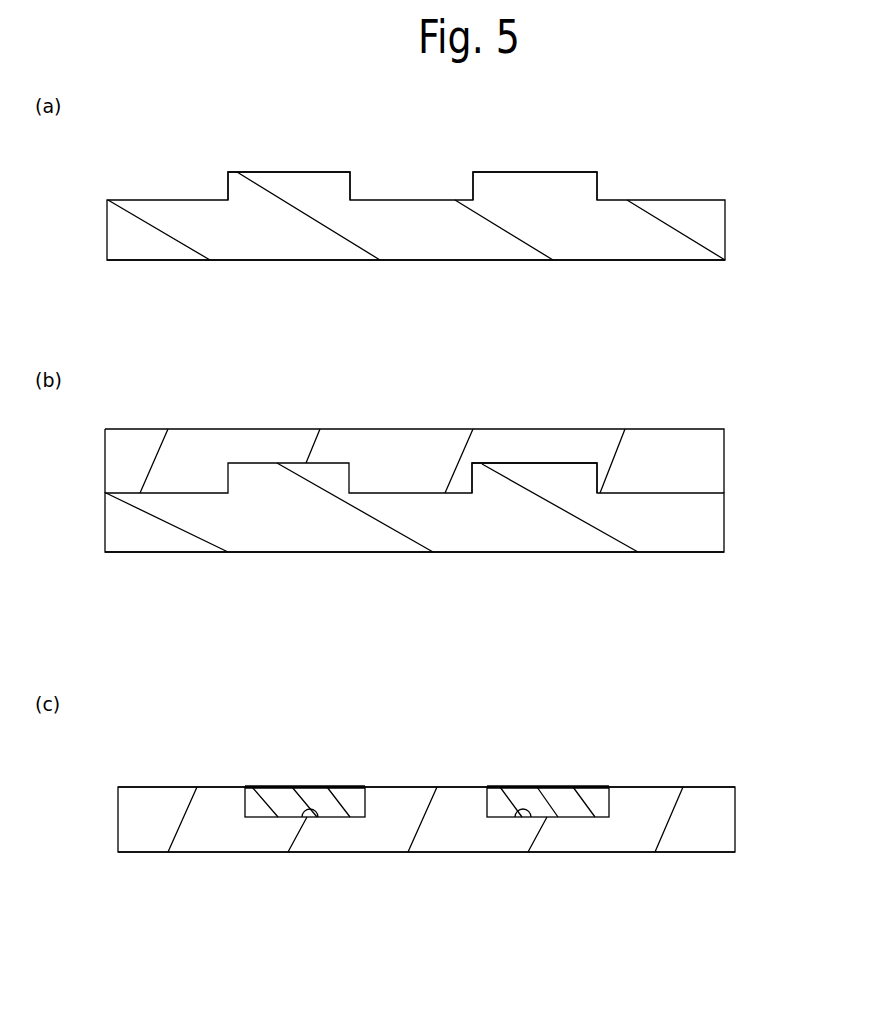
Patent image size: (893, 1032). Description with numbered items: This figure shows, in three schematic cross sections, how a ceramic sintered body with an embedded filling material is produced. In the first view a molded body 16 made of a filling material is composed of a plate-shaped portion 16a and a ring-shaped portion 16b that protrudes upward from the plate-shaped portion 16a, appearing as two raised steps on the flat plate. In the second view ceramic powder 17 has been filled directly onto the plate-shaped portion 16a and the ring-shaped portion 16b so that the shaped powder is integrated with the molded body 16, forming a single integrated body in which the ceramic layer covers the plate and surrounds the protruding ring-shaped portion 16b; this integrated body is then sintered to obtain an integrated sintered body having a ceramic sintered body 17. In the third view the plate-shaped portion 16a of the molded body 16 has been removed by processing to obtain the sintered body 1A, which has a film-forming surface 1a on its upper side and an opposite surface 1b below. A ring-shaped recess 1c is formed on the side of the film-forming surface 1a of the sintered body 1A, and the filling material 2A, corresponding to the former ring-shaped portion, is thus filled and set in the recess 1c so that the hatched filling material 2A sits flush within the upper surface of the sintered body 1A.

The molded body 16 is at (730, 211).
The plate-shaped portion 16a is at (712, 243).
The ring-shaped portion 16b is at (282, 180).
The ceramic powder 17 is at (702, 454).
The ceramic sintered body 1A is at (720, 820).
The film-forming surface 1a is at (653, 787).
The back surface of substrate 1b is at (630, 853).
The ring-shaped recess 1c is at (318, 812).
The filling material 2A is at (255, 803).